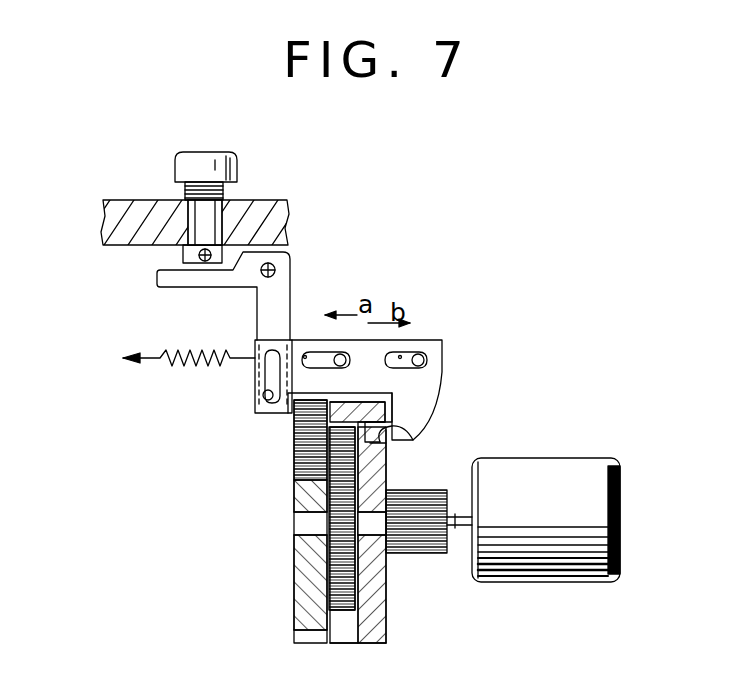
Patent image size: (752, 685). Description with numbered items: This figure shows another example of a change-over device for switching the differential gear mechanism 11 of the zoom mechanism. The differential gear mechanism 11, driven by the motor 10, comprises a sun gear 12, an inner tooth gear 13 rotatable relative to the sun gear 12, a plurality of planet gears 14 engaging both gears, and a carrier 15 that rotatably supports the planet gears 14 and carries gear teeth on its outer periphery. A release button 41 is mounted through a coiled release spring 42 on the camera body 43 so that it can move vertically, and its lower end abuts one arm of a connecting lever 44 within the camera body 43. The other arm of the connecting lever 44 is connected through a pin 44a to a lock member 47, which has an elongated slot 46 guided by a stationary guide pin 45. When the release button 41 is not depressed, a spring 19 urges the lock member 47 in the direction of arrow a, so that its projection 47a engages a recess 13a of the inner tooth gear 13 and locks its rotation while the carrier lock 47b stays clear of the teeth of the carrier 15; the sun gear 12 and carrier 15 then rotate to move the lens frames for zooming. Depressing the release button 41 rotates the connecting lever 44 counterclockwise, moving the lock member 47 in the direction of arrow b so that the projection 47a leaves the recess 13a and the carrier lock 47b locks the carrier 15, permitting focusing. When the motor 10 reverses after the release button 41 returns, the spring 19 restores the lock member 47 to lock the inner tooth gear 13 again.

The motor 10 is at (590, 470).
The differential gear mechanism 11 is at (272, 544).
The sun gear 12 is at (415, 537).
The inner tooth gear 13 is at (387, 616).
The recess 13a is at (382, 445).
The planet gears 14 is at (327, 475).
The carrier 15 is at (307, 600).
The spring 19 is at (193, 352).
The release button 41 is at (199, 162).
The release spring 42 is at (186, 190).
The camera body 43 is at (270, 212).
The connecting lever 44 is at (283, 262).
The pin 44a is at (255, 407).
The stationary guide pin 45 is at (345, 362).
The elongated slot 46 is at (312, 355).
The lock member 47 is at (430, 392).
The projection 47a is at (395, 432).
The carrier lock 47b is at (278, 415).